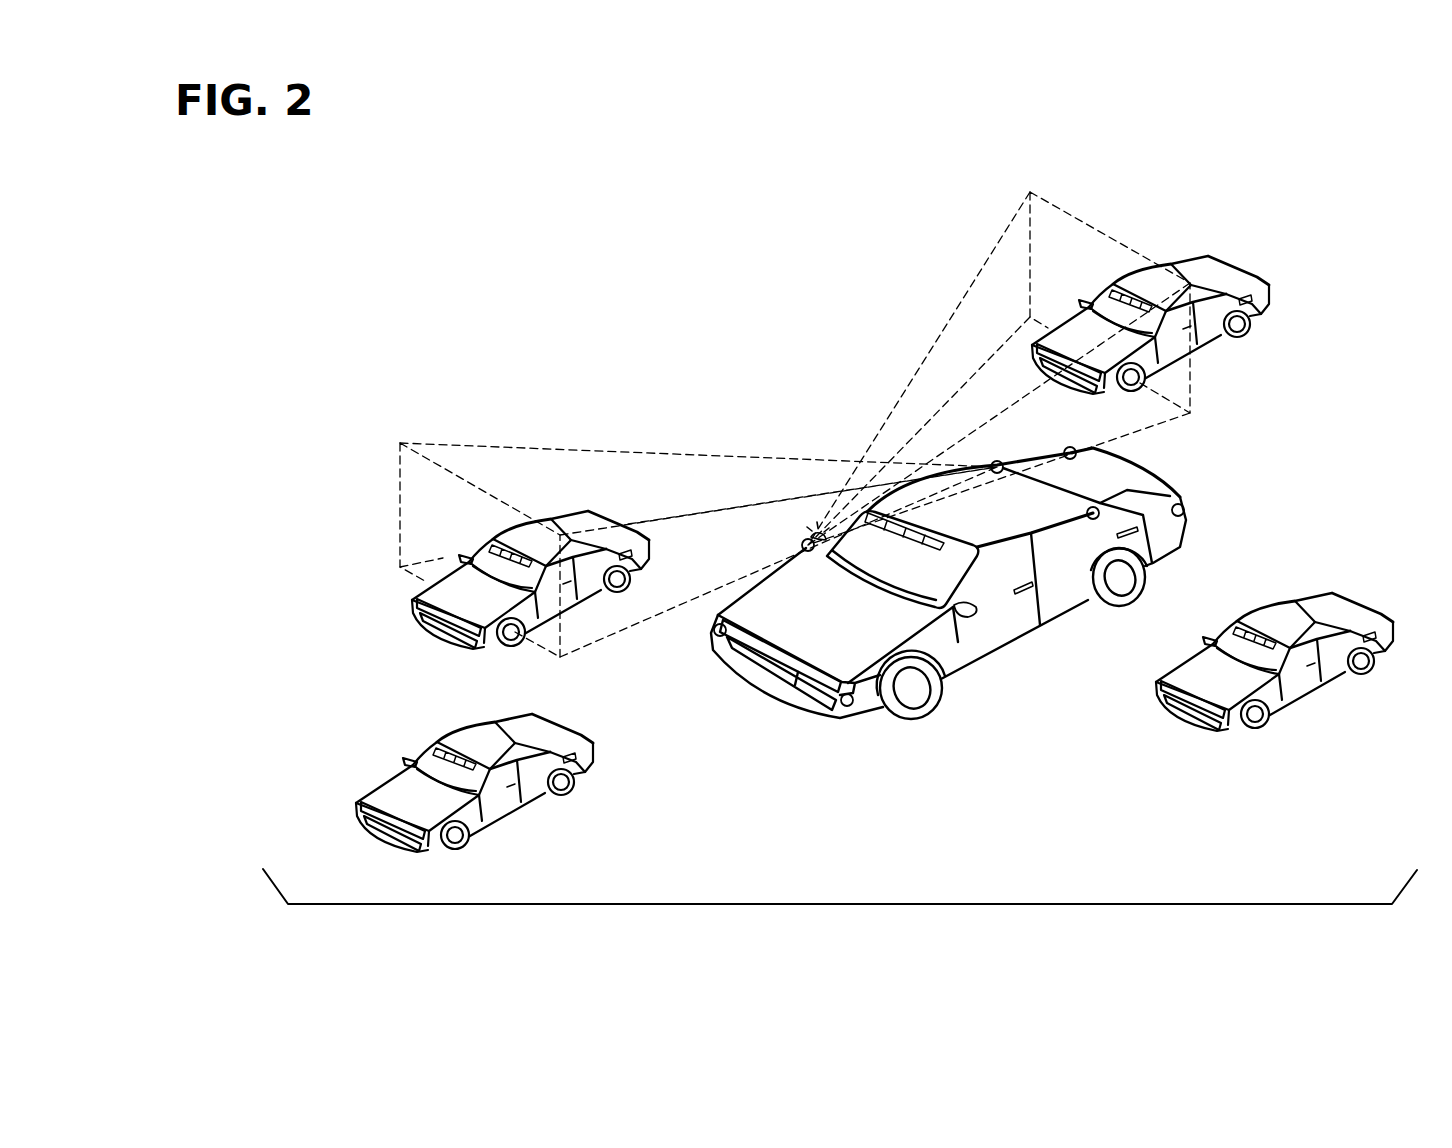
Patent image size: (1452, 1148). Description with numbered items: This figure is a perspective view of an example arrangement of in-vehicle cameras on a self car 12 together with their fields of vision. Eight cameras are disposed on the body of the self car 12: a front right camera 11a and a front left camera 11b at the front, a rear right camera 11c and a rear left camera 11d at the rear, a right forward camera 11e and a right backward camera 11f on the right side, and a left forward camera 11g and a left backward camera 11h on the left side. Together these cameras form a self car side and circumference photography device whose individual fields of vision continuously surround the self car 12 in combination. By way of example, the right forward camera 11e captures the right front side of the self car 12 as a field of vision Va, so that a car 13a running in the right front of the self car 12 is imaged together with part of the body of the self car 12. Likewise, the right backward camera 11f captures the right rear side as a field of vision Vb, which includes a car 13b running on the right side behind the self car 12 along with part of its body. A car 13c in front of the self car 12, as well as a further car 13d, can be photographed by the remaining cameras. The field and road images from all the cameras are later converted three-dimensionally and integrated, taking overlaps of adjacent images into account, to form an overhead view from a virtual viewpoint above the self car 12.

The front right camera 11a is at (713, 632).
The front left camera 11b is at (848, 707).
The rear right camera 11c is at (1075, 448).
The rear left camera 11d is at (1185, 511).
The right forward camera 11e is at (1004, 461).
The right backward camera 11f is at (801, 546).
The left forward camera 11g is at (1100, 510).
The left backward camera 11h is at (968, 624).
The self car 12 is at (1003, 634).
The car 13a is at (415, 598).
The car 13b is at (1243, 268).
The car 13c is at (497, 810).
The car 13d is at (1300, 690).
The field of vision Va is at (529, 463).
The field of vision Vb is at (1090, 250).